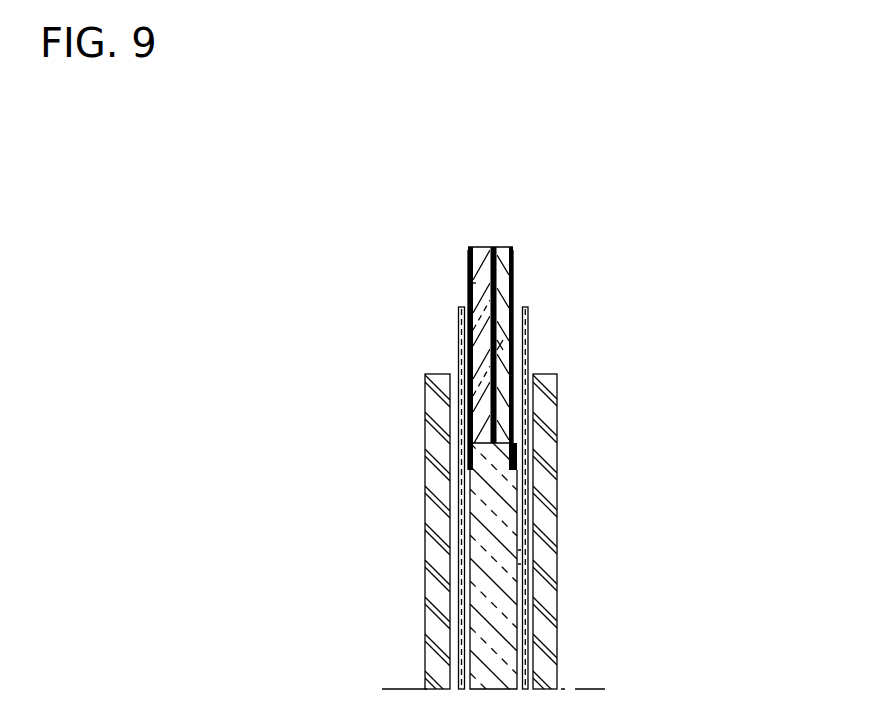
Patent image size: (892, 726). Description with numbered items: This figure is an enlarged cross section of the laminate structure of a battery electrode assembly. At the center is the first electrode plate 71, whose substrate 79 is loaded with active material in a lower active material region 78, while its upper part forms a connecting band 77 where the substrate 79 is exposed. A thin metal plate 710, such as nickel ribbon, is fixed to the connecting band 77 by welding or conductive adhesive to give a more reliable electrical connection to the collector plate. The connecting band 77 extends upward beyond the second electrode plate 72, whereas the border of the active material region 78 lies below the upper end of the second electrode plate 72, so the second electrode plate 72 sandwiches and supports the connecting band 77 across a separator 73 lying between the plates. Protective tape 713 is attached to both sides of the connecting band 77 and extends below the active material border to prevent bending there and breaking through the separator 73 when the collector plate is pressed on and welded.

The first electrode plate 71 is at (480, 547).
The second electrode plate 72 is at (432, 465).
The separator 73 is at (458, 345).
The connecting band 77 is at (500, 345).
The active material region 78 is at (520, 557).
The substrate 79 is at (473, 283).
The thin metal plate 710 is at (503, 283).
The protective tape 713 is at (469, 264).